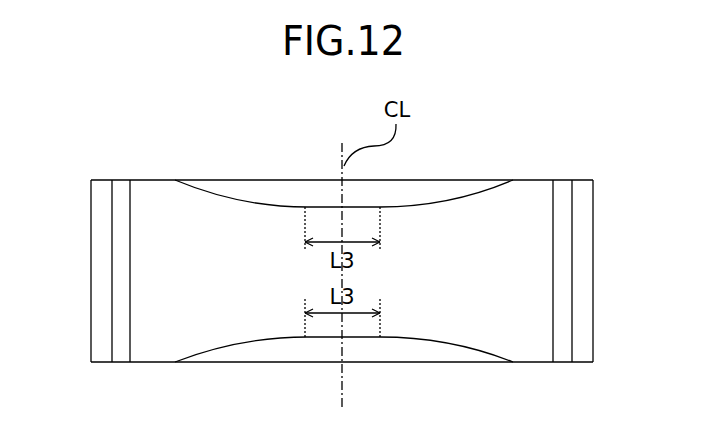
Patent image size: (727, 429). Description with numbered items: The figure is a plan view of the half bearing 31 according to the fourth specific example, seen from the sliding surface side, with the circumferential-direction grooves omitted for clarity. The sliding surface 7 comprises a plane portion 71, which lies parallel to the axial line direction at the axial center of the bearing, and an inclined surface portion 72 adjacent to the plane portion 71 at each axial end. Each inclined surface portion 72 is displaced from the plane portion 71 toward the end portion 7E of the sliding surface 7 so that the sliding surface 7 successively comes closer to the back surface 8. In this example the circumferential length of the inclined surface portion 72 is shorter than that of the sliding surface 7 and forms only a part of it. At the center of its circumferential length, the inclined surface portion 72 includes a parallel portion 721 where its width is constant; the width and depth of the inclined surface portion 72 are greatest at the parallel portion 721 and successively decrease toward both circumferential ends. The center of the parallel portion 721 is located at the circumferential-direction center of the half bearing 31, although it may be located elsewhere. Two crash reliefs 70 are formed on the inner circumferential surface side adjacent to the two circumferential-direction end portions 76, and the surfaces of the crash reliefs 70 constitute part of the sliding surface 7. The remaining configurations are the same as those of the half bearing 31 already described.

The sliding surface 7 is at (245, 237).
The plane portion 71 is at (282, 228).
The end portion of the sliding surface 7E is at (393, 178).
The inclined surface portion 72 is at (458, 191).
The parallel portion 721 is at (358, 208).
The circumferential-direction end portion 76 is at (98, 190).
The crash relief 70 is at (123, 355).
The back surface 8 is at (92, 270).
The half bearing 31 is at (486, 109).